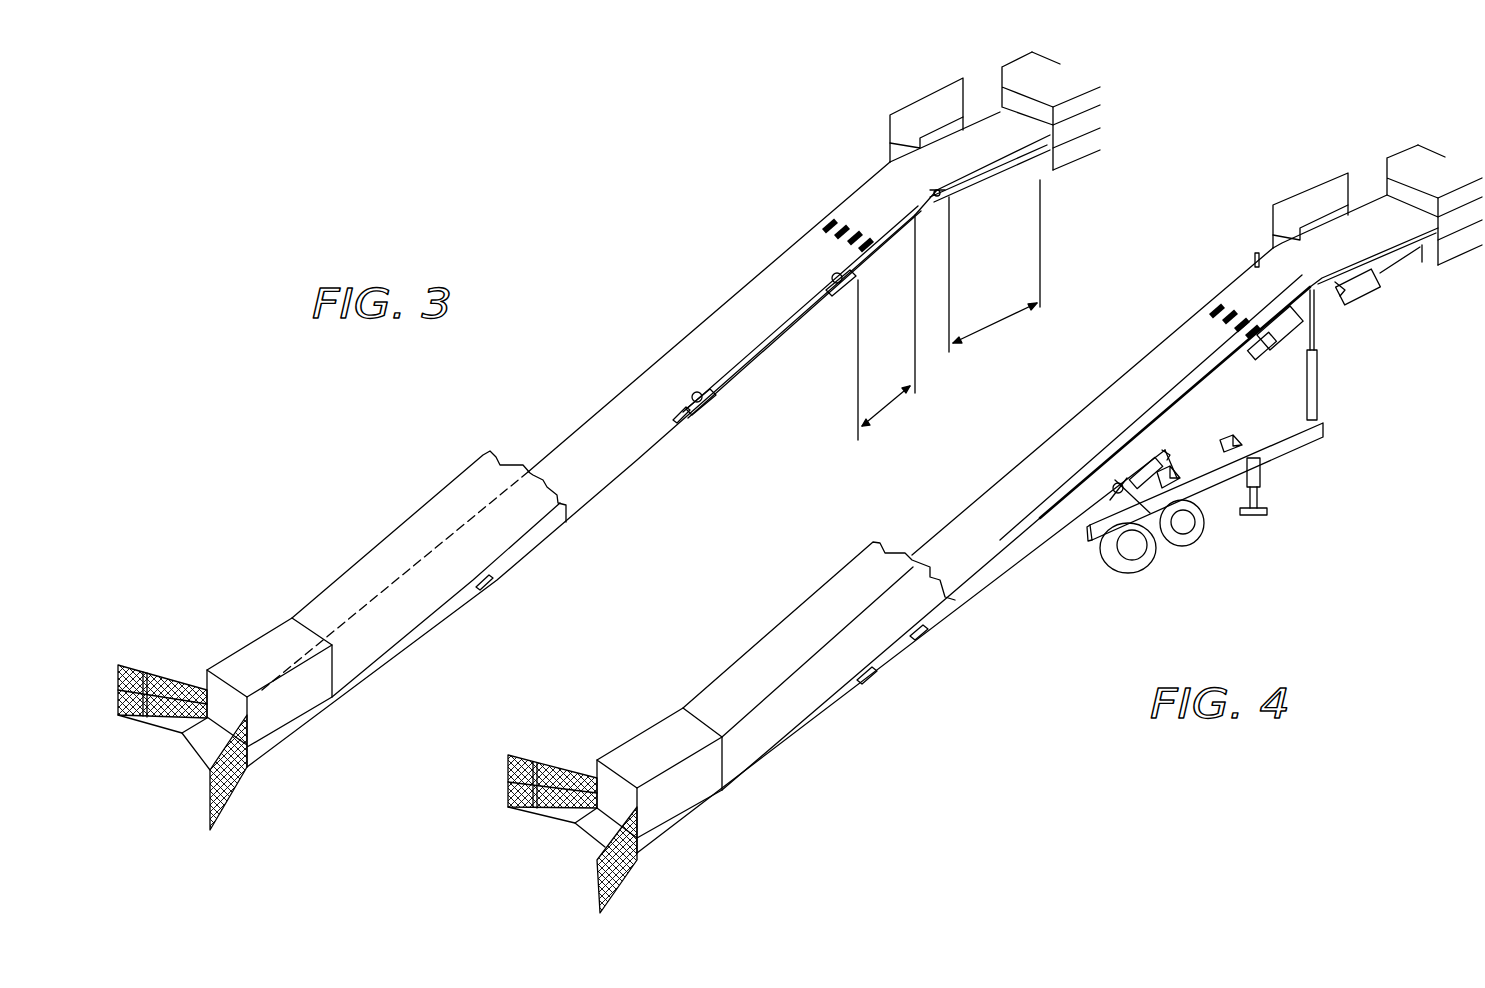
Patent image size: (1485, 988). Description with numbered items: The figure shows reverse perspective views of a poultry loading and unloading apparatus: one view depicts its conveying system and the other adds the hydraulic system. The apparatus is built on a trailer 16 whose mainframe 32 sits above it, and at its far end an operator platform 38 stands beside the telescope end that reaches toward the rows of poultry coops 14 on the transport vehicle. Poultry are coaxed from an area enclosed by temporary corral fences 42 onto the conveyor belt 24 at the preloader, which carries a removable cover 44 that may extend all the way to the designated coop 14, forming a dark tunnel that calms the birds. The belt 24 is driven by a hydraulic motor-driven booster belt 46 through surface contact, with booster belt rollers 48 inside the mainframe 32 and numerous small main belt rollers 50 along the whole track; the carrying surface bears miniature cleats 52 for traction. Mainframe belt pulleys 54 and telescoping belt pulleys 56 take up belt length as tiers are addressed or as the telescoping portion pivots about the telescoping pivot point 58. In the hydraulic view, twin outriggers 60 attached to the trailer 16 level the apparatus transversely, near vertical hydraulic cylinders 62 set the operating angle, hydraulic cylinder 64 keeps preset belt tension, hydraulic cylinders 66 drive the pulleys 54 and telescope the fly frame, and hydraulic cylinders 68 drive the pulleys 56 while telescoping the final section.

In FIG. 3, the poultry coop 14 is at (1030, 92).
In FIG. 4, the poultry coop 14 is at (1412, 180).
In FIG. 4, the trailer 16 is at (1090, 530).
In FIG. 3, the conveyor belt 24 is at (578, 447).
In FIG. 4, the conveyor belt 24 is at (1020, 487).
In FIG. 4, the mainframe 32 is at (966, 507).
In FIG. 3, the operator platform 38 is at (934, 92).
In FIG. 4, the operator platform 38 is at (1300, 182).
In FIG. 3, the temporary corral fence 42 is at (130, 667).
In FIG. 3, the removable cover 44 is at (340, 591).
In FIG. 3, the booster belt 46 is at (763, 345).
In FIG. 3, the booster belt roller 48 is at (840, 286).
In FIG. 3, the main belt roller 50 is at (670, 424).
In FIG. 4, the main belt roller 50 is at (1156, 520).
In FIG. 3, the miniature cleat 52 is at (838, 216).
In FIG. 3, the mainframe belt pulley 54 is at (886, 328).
In FIG. 3, the telescoping belt pulley 56 is at (1003, 322).
In FIG. 3, the telescoping pivot point 58 is at (947, 200).
In FIG. 4, the hydraulic cylinder outrigger 60 is at (1262, 480).
In FIG. 4, the hydraulic cylinder 62 is at (1253, 252).
In FIG. 4, the hydraulic cylinder 64 is at (1164, 456).
In FIG. 4, the hydraulic cylinder 66 is at (1283, 350).
In FIG. 4, the hydraulic cylinder 68 is at (1362, 298).